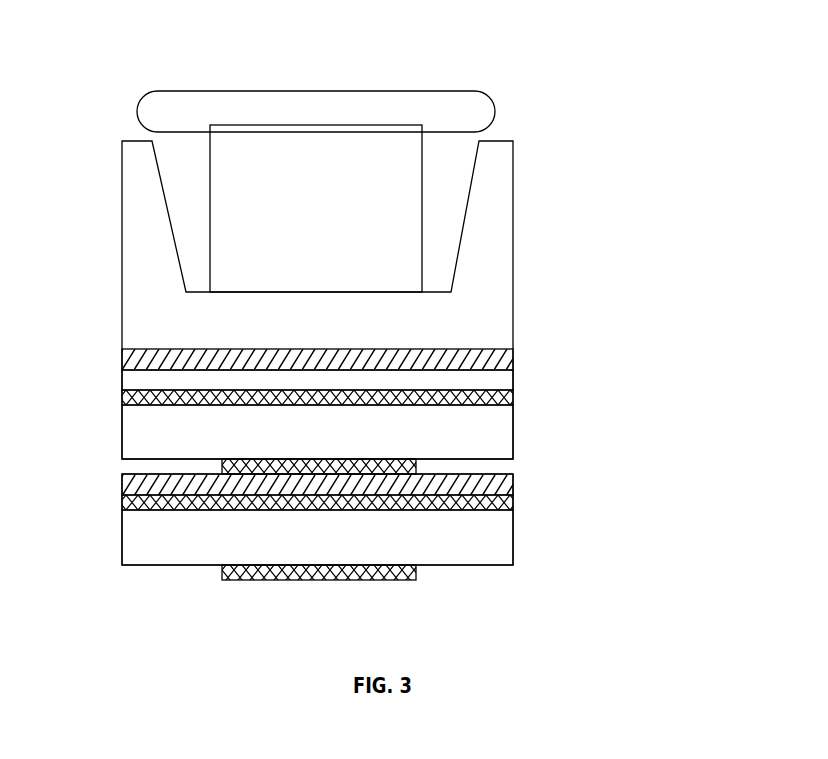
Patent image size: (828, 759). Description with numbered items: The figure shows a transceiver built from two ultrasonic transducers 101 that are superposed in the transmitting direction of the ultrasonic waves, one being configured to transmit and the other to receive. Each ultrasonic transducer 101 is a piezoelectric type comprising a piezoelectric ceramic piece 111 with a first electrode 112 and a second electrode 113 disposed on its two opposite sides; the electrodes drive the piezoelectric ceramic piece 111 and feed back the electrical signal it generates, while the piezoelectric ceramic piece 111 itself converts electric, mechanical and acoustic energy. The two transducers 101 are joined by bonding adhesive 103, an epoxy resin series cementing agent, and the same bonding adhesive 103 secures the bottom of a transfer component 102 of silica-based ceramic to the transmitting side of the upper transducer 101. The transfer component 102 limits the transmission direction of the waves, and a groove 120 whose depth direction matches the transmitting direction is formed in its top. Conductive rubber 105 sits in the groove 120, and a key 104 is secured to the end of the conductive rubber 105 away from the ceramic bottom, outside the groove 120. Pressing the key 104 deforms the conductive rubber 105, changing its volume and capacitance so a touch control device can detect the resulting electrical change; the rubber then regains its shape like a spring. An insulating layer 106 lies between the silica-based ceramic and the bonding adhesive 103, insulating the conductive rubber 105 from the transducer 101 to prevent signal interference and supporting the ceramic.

The ultrasonic transducer 101 is at (644, 462).
The transfer component 102 is at (492, 282).
The bonding adhesive 103 is at (512, 349).
The key 104 is at (455, 105).
The conductive rubber 105 is at (239, 148).
The insulating layer 106 is at (502, 387).
The piezoelectric ceramic piece 111 is at (497, 443).
The first electrode 112 is at (508, 400).
The second electrode 113 is at (222, 470).
The groove 120 is at (448, 166).